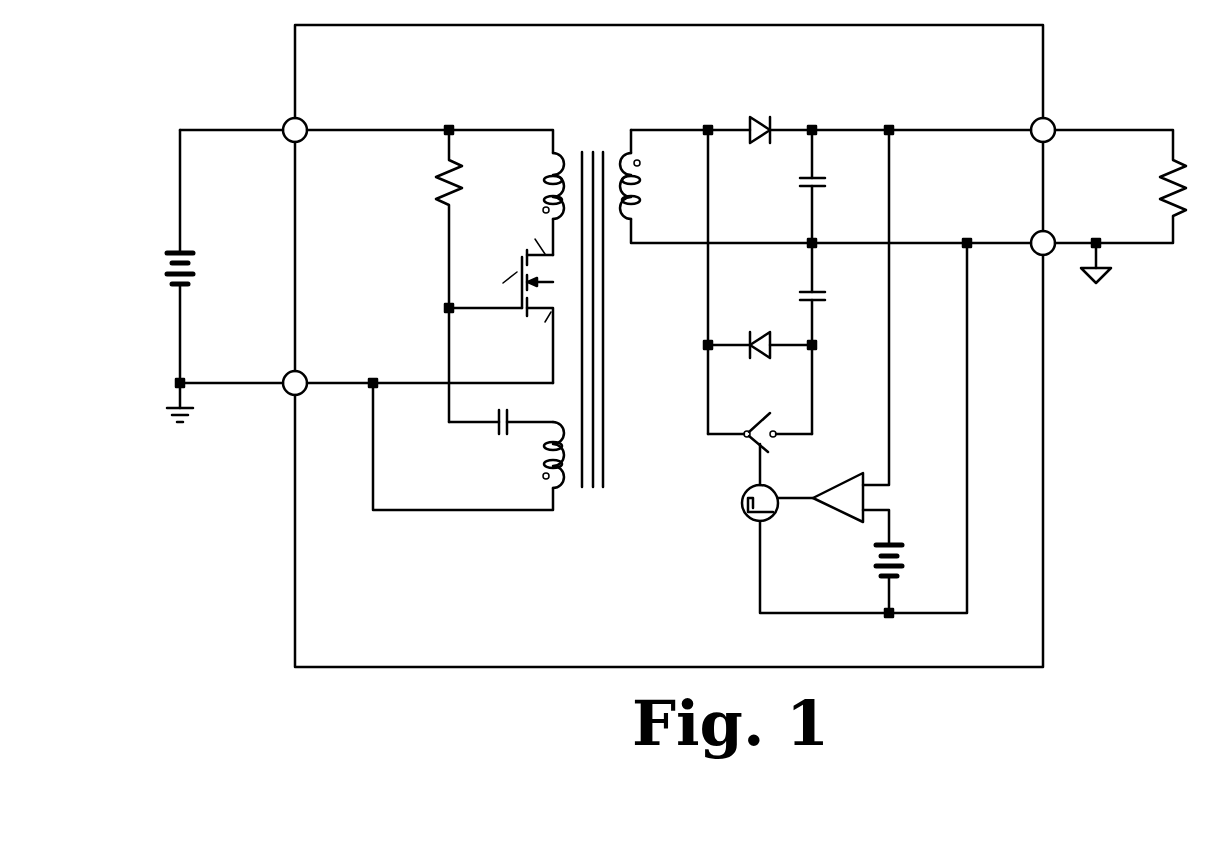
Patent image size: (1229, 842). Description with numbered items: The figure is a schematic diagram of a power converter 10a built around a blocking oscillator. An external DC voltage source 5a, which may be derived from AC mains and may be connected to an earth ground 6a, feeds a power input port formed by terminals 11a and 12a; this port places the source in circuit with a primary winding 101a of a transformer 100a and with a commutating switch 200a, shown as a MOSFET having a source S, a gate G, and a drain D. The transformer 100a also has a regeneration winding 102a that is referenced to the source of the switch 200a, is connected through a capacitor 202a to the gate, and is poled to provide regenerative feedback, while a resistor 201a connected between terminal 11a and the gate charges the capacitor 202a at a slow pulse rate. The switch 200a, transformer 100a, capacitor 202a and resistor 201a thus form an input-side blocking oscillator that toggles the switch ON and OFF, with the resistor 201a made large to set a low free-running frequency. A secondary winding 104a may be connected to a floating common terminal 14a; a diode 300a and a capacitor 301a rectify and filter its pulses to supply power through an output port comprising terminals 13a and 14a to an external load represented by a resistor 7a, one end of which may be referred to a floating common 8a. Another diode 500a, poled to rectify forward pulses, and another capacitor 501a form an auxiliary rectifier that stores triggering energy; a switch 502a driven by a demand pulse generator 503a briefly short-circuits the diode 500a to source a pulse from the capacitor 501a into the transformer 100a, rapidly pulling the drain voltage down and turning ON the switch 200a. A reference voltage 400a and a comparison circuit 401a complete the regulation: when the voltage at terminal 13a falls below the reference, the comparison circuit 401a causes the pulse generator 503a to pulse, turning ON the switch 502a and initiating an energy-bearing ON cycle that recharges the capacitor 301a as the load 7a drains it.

The power converter 10a is at (712, 67).
The terminal 11a is at (285, 121).
The terminal 12a is at (285, 372).
The terminal 13a is at (1054, 122).
The floating common terminal 14a is at (1054, 235).
The DC voltage source 5a is at (170, 252).
The earth ground 6a is at (172, 407).
The resistor 7a is at (1160, 181).
The floating common 8a is at (1112, 272).
The transformer 100a is at (607, 373).
The primary winding 101a is at (544, 198).
The regeneration winding 102a is at (540, 463).
The secondary winding 104a is at (624, 150).
The commutating switch 200a is at (521, 315).
The resistor 201a is at (438, 192).
The capacitor 202a is at (497, 426).
The diode 300a is at (758, 120).
The capacitor 301a is at (803, 190).
The reference voltage 400a is at (913, 534).
The comparison circuit 401a is at (840, 514).
The diode 500a is at (758, 324).
The capacitor 501a is at (821, 291).
The switch 502a is at (760, 437).
The demand pulse generator 503a is at (746, 520).